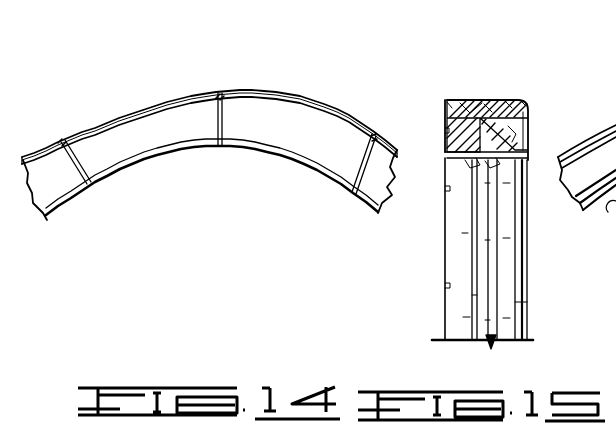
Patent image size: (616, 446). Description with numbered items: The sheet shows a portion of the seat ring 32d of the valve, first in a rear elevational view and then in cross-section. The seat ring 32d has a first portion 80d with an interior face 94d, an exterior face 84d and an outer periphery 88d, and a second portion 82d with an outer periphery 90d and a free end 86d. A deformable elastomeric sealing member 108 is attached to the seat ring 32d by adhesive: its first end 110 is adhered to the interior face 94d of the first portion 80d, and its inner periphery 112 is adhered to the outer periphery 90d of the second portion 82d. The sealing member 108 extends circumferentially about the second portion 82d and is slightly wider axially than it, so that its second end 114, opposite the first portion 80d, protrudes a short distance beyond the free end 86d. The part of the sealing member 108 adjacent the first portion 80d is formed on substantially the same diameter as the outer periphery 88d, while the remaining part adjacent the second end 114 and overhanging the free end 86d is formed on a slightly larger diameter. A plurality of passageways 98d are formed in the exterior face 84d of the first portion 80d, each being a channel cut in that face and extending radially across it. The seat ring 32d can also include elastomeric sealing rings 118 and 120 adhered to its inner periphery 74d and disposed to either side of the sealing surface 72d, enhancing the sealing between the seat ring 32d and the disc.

In FIG. 14, the seat ring 32d is at (188, 76).
In FIG. 15, the seat ring 32d is at (517, 61).
In FIG. 15, the sealing surface 72d is at (498, 158).
In FIG. 15, the inner periphery 74d is at (466, 239).
In FIG. 14, the first portion 80d is at (292, 125).
In FIG. 15, the first portion 80d is at (447, 110).
In FIG. 15, the second portion 82d is at (528, 118).
In FIG. 14, the exterior face 84d is at (330, 150).
In FIG. 15, the exterior face 84d is at (445, 152).
In FIG. 15, the free end 86d is at (520, 132).
In FIG. 15, the outer periphery 88d is at (458, 100).
In FIG. 15, the outer periphery 90d is at (510, 98).
In FIG. 15, the interior face 94d is at (460, 100).
In FIG. 14, the passageway 98d is at (74, 160).
In FIG. 15, the passageway 98d is at (445, 130).
In FIG. 15, the sealing member 108 is at (487, 100).
In FIG. 15, the first end 110 is at (447, 100).
In FIG. 15, the inner periphery 112 is at (470, 160).
In FIG. 15, the second end 114 is at (528, 98).
In FIG. 15, the sealing ring 118 is at (485, 297).
In FIG. 15, the sealing ring 120 is at (507, 302).